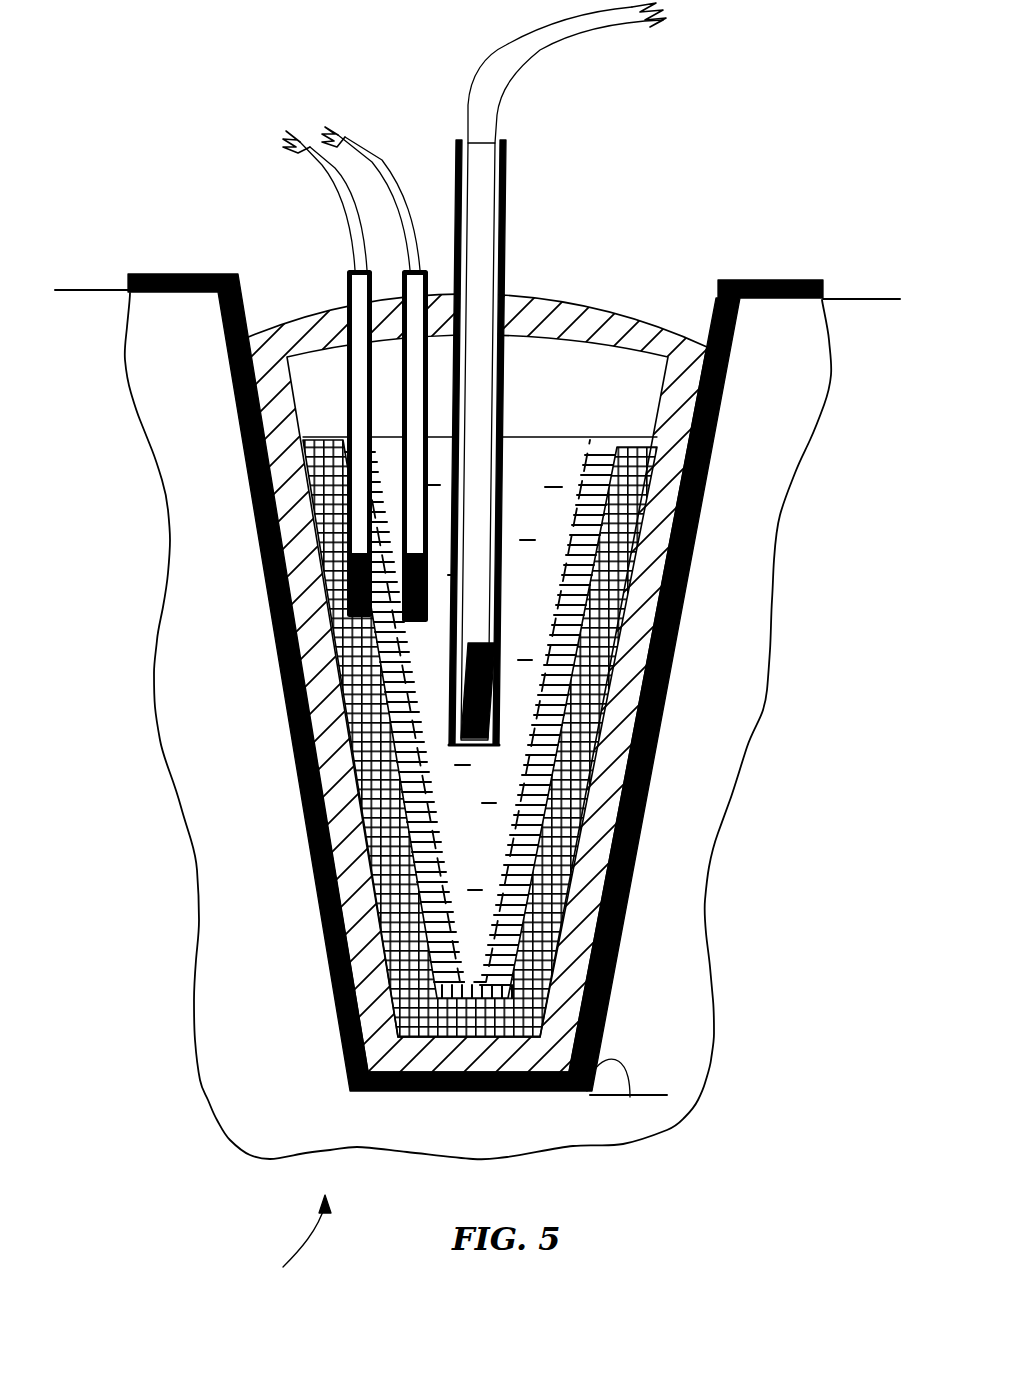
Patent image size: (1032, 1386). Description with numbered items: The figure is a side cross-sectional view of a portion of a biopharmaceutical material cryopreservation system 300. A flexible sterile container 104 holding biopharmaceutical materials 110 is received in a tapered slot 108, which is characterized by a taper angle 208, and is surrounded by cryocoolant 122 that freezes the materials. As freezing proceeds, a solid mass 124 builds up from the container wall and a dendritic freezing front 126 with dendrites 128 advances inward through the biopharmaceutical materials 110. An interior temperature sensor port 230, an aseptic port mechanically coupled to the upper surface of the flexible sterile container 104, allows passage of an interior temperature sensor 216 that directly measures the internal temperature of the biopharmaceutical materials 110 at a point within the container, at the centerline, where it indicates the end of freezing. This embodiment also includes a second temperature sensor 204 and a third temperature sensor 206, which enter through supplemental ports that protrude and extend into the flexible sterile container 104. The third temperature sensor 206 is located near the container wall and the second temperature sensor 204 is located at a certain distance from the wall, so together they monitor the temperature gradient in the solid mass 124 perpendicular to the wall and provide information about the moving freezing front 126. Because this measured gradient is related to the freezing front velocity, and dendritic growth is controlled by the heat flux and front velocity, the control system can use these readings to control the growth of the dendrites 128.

The flexible sterile container 104 is at (265, 322).
The tapered slot 108 is at (250, 478).
The biopharmaceutical materials 110 is at (552, 503).
The cryocoolant 122 is at (765, 710).
The solid mass 124 is at (686, 583).
The dendritic freezing front 126 is at (572, 513).
The dendrites 128 is at (647, 790).
The second temperature sensor 204 is at (338, 186).
The third temperature sensor 206 is at (365, 143).
The taper angle 208 is at (617, 1060).
The interior temperature sensor 216 is at (532, 530).
The interior temperature sensor port 230 is at (505, 183).
The biopharmaceutical material cryopreservation system 300 is at (283, 1246).